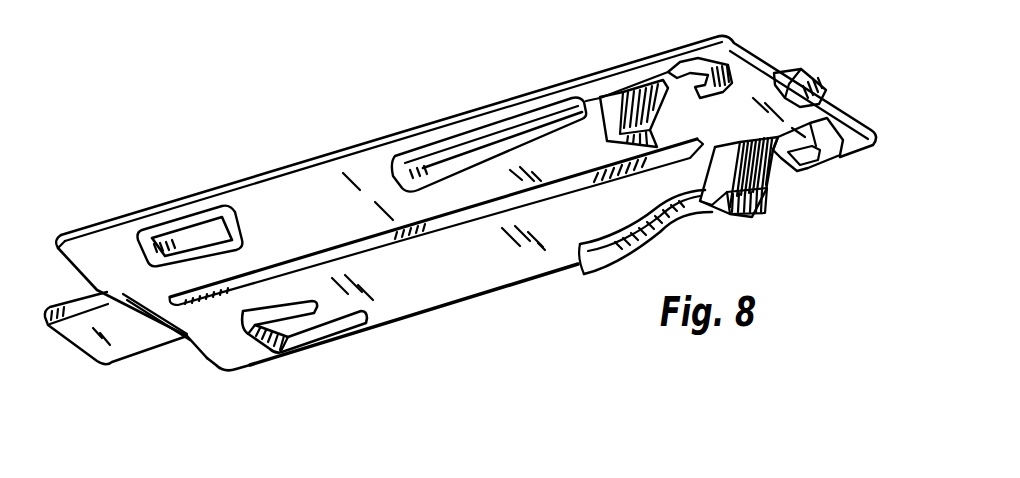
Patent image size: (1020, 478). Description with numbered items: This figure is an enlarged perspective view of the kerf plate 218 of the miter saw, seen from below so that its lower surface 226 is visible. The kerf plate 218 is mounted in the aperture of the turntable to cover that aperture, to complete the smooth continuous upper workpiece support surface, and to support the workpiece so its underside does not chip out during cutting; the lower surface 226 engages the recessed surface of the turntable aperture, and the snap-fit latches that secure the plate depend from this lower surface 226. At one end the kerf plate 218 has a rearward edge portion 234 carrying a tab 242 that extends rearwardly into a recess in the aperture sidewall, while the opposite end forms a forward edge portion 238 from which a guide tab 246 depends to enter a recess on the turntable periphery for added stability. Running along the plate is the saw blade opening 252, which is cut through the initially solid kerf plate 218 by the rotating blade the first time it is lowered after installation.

The kerf plate 218 is at (283, 167).
The lower surface 226 is at (413, 280).
The rearward edge portion 234 is at (205, 361).
The forward edge portion 238 is at (855, 115).
The tab 242 is at (123, 363).
The guide tab 246 is at (773, 73).
The saw blade opening 252 is at (347, 247).